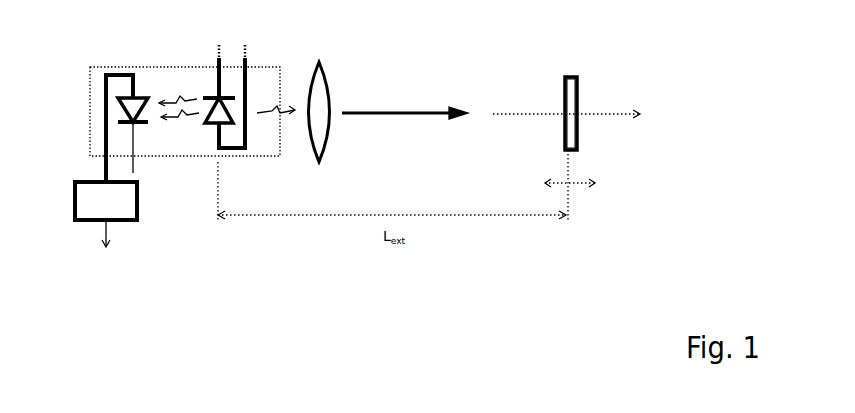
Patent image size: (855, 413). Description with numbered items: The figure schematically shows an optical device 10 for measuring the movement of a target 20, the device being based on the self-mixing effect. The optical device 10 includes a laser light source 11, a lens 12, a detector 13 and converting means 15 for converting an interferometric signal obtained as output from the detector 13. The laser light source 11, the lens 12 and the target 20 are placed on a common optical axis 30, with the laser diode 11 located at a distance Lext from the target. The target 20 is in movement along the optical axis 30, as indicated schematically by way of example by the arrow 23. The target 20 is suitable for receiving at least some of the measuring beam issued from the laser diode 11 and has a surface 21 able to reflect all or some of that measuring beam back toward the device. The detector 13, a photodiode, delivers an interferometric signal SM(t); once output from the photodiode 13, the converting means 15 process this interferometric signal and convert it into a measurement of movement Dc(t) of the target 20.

The optical device 10 is at (157, 66).
The laser light source 11 is at (221, 117).
The lens 12 is at (325, 145).
The detector 13 is at (130, 107).
The converting means 15 is at (90, 201).
The target 20 is at (569, 78).
The surface 21 is at (566, 82).
The arrow 23 is at (572, 185).
The optical axis 30 is at (605, 112).